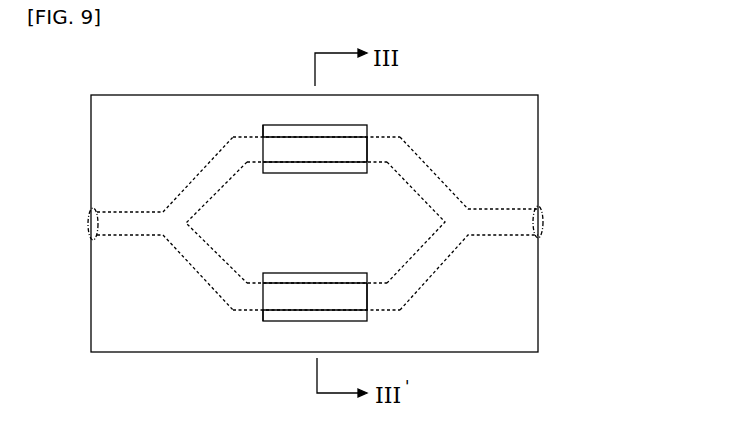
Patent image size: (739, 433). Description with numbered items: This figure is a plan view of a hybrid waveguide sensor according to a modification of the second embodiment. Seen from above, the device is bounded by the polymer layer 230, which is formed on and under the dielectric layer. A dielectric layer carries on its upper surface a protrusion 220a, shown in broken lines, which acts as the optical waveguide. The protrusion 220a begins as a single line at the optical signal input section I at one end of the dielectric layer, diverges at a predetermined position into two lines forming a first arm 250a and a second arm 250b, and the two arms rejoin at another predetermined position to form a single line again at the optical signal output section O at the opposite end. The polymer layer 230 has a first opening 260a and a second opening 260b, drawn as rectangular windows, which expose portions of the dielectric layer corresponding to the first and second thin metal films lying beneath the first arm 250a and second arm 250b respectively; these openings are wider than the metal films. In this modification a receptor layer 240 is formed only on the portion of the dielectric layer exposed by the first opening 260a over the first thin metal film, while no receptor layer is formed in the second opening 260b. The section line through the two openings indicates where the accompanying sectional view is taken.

The polymer layer 230 is at (528, 155).
The protrusion 220a is at (283, 147).
The receptor layer 240 is at (287, 300).
The second opening 260b is at (278, 130).
The second arm 250b is at (377, 148).
The first opening 260a is at (277, 316).
The first arm 250a is at (377, 298).
The optical signal input section I is at (86, 225).
The optical signal output section O is at (545, 222).